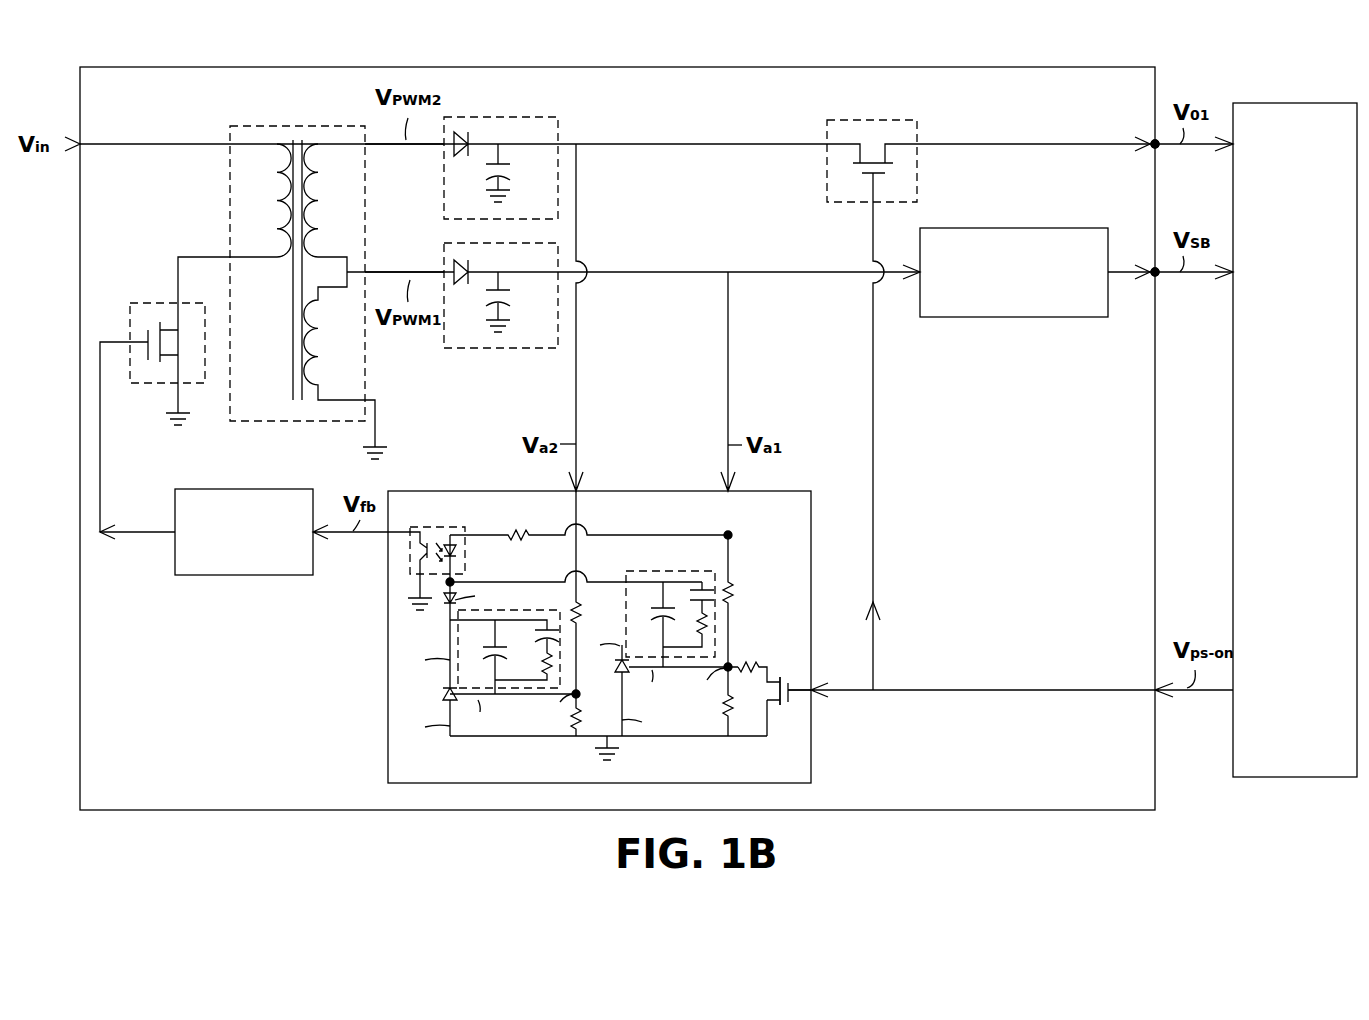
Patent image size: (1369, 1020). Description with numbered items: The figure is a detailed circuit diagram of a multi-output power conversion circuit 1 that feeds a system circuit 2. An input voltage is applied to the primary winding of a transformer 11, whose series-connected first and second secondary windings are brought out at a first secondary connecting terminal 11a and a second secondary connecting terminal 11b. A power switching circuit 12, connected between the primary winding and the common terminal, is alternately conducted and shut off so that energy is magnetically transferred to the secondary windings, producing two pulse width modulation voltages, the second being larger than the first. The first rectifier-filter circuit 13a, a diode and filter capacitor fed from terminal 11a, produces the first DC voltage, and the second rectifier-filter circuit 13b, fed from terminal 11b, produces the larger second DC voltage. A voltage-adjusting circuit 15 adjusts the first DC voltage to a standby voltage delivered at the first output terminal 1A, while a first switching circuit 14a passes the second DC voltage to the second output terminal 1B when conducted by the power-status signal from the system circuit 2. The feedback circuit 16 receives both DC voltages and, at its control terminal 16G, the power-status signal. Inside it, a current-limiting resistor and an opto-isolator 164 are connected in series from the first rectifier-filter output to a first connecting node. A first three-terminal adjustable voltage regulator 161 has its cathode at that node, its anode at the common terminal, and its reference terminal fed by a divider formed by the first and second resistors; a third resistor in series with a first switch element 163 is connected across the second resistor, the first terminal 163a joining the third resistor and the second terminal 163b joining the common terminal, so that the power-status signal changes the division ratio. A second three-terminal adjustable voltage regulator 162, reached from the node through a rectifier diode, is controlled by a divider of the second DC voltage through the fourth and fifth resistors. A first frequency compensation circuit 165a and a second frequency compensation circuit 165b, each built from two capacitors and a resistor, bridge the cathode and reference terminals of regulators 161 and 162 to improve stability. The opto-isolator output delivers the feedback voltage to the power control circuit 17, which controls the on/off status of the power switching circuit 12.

The power conversion circuit 1 is at (575, 67).
The system circuit 2 is at (1282, 103).
The transformer 11 is at (280, 126).
The first secondary connecting terminal 11a is at (368, 272).
The second secondary connecting terminal 11b is at (368, 145).
The power switching circuit 12 is at (160, 303).
The first rectifier-filter circuit 13a is at (498, 348).
The second rectifier-filter circuit 13b is at (498, 117).
The first switching circuit 14a is at (873, 120).
The voltage-adjusting circuit 15 is at (1027, 228).
The feedback circuit 16 is at (775, 491).
The power control circuit 17 is at (237, 489).
The first three-terminal adjustable voltage regulator 161 is at (658, 690).
The second three-terminal adjustable voltage regulator 162 is at (443, 692).
The first switch element 163 is at (818, 711).
The first terminal of the first switch element 163a is at (770, 673).
The second terminal of the first switch element 163b is at (770, 736).
The opto-isolator 164 is at (433, 527).
The first frequency compensation circuit 165a is at (693, 571).
The second frequency compensation circuit 165b is at (533, 608).
The first output terminal 1A is at (1155, 270).
The second output terminal 1B is at (1155, 142).
The control terminal of the feedback circuit 16G is at (813, 690).